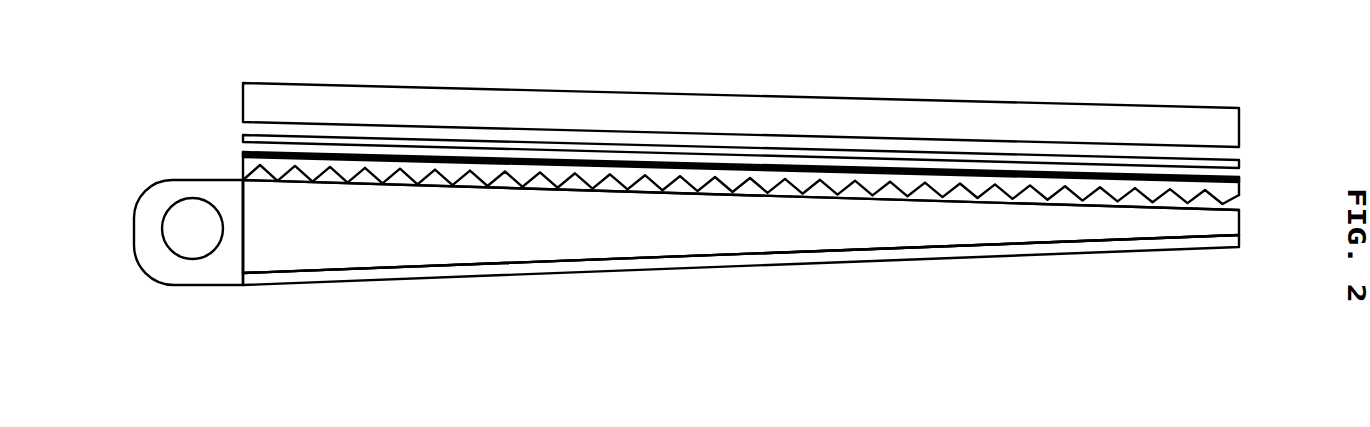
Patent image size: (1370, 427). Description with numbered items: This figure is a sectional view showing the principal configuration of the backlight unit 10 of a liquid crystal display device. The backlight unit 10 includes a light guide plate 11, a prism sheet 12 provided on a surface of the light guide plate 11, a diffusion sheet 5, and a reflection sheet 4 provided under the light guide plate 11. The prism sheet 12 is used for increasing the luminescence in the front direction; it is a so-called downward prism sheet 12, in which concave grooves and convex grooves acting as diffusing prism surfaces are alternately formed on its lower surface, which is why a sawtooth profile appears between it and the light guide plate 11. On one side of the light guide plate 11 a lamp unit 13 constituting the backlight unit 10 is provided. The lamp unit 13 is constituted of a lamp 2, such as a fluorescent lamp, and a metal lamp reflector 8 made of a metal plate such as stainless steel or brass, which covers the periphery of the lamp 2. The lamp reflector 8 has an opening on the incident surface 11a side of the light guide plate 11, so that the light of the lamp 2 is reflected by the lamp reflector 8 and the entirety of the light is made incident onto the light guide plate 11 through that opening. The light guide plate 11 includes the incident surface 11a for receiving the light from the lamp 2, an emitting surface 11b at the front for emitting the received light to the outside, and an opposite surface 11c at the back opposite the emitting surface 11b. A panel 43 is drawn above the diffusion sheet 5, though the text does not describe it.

The lamp 2 is at (167, 250).
The reflection sheet 4 is at (347, 280).
The diffusion sheet 5 is at (243, 140).
The lamp reflector 8 is at (208, 287).
The backlight unit 10 is at (1265, 163).
The light guide plate 11 is at (627, 230).
The incident surface 11a is at (243, 238).
The emitting surface 11b is at (421, 186).
The opposite surface 11c is at (460, 262).
The prism sheet 12 is at (243, 163).
The lamp unit 13 is at (112, 230).
The liquid crystal display panel 43 is at (337, 83).